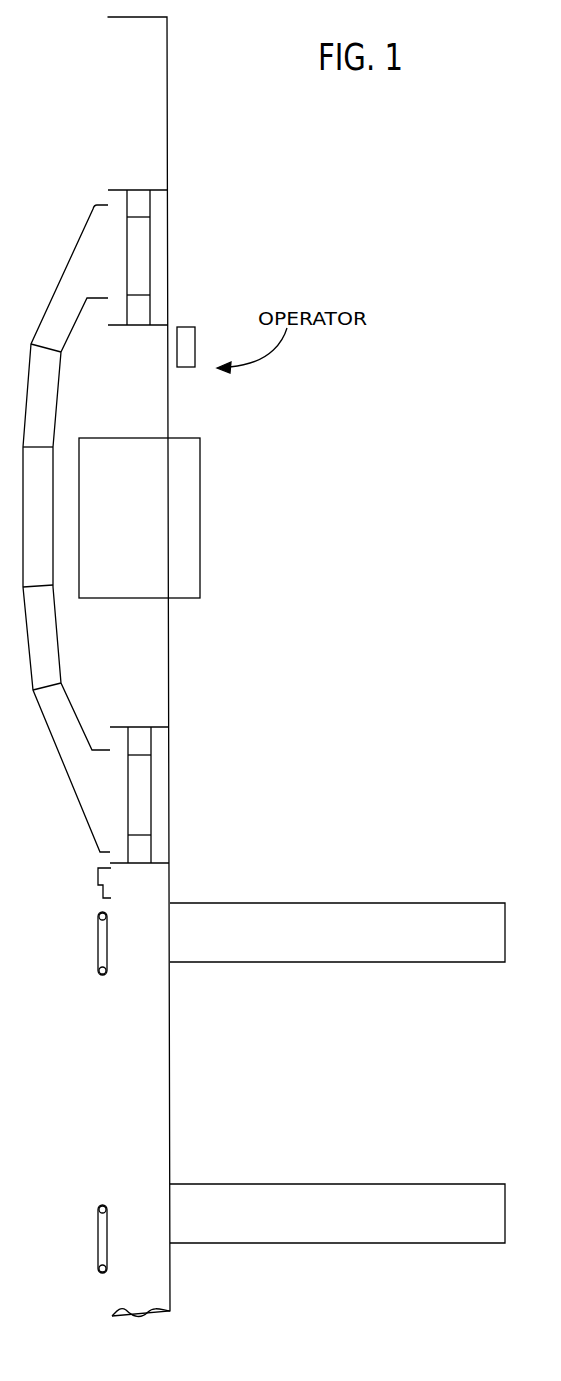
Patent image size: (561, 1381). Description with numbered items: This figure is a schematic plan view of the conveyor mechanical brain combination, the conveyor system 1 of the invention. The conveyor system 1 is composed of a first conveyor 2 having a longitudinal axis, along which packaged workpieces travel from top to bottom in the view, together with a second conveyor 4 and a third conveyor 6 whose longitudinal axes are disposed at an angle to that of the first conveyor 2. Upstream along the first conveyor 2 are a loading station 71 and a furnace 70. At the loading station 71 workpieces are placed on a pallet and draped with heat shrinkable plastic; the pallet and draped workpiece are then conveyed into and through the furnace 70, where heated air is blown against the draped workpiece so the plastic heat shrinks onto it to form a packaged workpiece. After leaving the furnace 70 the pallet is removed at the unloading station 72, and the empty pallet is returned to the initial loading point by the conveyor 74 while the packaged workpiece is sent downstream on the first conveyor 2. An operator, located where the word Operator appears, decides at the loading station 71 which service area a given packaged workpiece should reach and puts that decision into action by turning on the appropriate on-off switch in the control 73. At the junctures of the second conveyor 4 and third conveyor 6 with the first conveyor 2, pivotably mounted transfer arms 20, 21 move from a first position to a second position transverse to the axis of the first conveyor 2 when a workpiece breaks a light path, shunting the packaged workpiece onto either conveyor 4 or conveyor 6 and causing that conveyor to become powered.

The conveyor system 1 is at (420, 430).
The first conveyor 2 is at (146, 105).
The second conveyor 4 is at (339, 938).
The third conveyor 6 is at (339, 1225).
The arm 20 is at (98, 1241).
The arm 21 is at (97, 946).
The furnace 70 is at (149, 550).
The loading station 71 is at (168, 263).
The unloading station 72 is at (170, 801).
The control 73 is at (196, 341).
The conveyor 74 is at (47, 521).